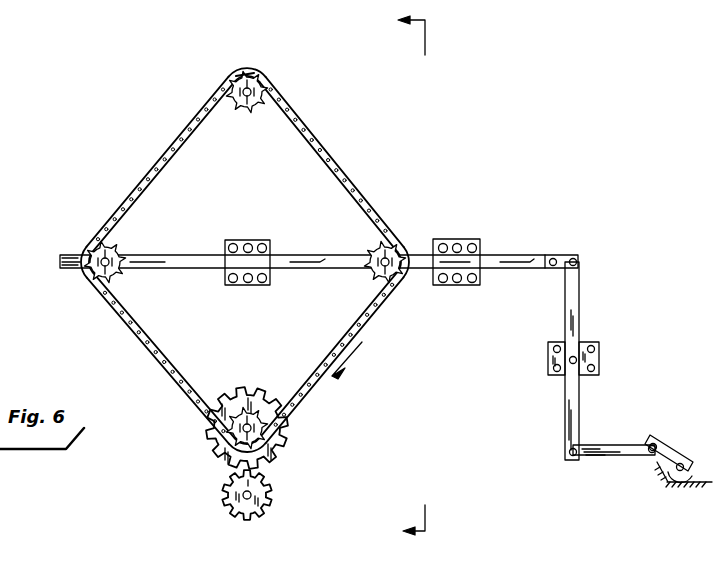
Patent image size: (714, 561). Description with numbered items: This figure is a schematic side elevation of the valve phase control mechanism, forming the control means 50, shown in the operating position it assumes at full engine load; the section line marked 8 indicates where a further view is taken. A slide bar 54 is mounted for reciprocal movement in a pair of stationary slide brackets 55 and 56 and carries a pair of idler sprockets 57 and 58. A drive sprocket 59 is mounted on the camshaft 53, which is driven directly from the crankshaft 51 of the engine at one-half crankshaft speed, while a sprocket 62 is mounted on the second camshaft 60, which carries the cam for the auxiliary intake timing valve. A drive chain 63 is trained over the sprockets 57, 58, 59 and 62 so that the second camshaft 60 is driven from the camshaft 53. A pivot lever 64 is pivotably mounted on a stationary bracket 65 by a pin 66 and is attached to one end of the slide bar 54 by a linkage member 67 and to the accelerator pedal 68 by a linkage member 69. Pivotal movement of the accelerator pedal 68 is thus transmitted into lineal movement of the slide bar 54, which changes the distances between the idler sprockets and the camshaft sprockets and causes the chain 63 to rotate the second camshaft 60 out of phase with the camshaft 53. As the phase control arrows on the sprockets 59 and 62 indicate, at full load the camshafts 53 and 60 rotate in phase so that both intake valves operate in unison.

The section line 8- 8 is at (402, 276).
The control means 50 is at (579, 257).
The crankshaft 51 is at (243, 498).
The camshaft 53 is at (270, 432).
The slide bar 54 is at (178, 253).
The slide bracket 55 is at (243, 239).
The slide bracket 56 is at (465, 238).
The idler sprocket 57 is at (99, 254).
The idler sprocket 58 is at (393, 245).
The drive sprocket 59 is at (235, 432).
The second camshaft 60 is at (240, 75).
The sprocket 62 is at (258, 78).
The drive chain 63 is at (153, 164).
The pivot lever 64 is at (580, 326).
The stationary bracket 65 is at (601, 359).
The pin 66 is at (571, 364).
The linkage member 67 is at (551, 270).
The accelerator pedal 68 is at (676, 445).
The linkage member 69 is at (603, 457).